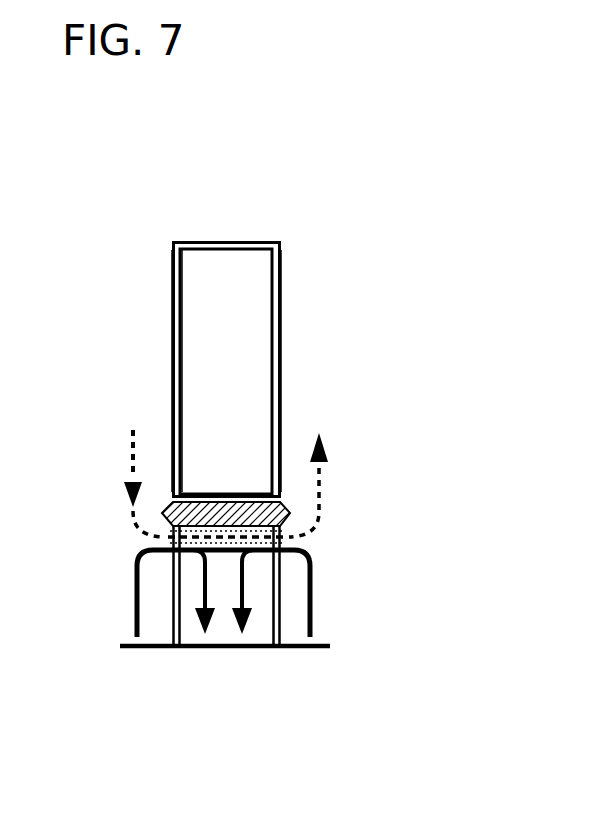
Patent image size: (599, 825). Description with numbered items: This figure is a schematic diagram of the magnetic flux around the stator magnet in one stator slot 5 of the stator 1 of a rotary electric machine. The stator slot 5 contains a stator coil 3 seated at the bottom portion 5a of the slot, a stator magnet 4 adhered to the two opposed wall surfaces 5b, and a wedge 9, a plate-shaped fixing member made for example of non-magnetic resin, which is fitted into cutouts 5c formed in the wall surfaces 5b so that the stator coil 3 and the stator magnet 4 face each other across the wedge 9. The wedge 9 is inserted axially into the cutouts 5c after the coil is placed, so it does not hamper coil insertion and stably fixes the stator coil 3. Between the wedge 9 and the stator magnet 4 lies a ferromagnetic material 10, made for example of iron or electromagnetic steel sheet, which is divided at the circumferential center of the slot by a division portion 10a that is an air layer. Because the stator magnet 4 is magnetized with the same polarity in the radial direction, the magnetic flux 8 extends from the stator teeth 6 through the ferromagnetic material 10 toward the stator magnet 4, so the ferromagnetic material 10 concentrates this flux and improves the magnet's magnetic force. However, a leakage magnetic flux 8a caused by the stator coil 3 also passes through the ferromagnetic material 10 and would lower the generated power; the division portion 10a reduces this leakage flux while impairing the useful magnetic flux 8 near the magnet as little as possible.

The stator 1 is at (398, 218).
The stator coil 3 is at (258, 357).
The stator magnet 4 is at (205, 647).
The stator slot 5 is at (202, 239).
The bottom portion 5a is at (243, 250).
The wall surfaces 5b is at (171, 369).
The cutouts 5c is at (290, 513).
The stator teeth 6 is at (152, 633).
The magnetic flux 8 is at (322, 563).
The magnetic flux 8a is at (323, 510).
The wedge 9 is at (171, 503).
The ferromagnetic material 10 is at (165, 547).
The division portion 10a is at (257, 617).